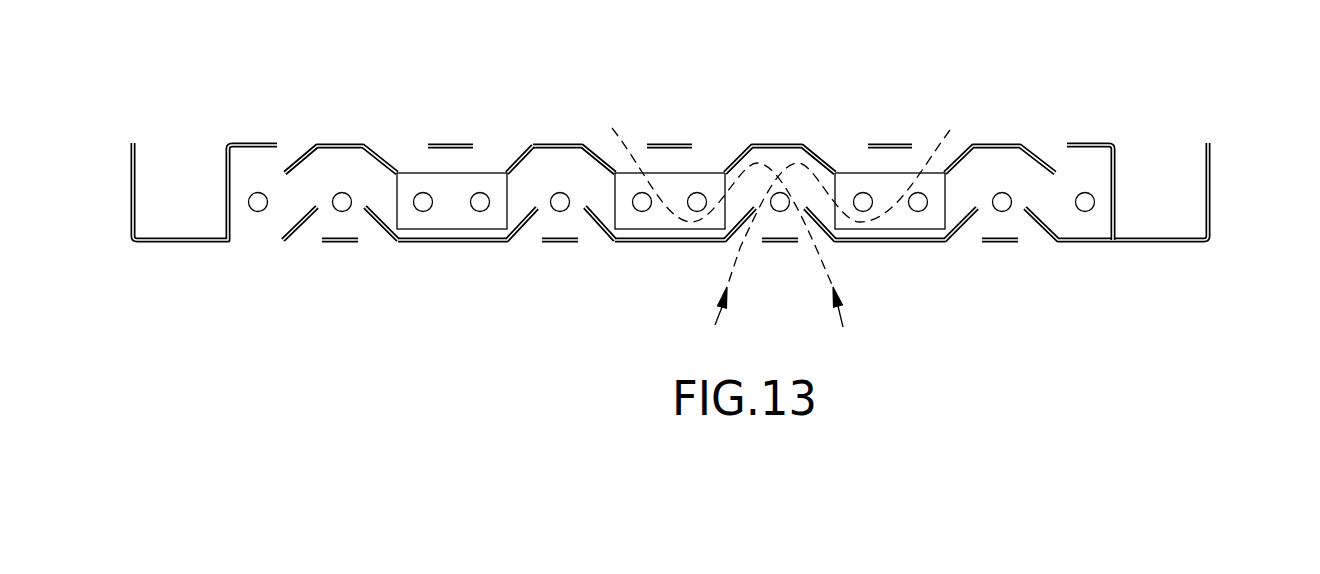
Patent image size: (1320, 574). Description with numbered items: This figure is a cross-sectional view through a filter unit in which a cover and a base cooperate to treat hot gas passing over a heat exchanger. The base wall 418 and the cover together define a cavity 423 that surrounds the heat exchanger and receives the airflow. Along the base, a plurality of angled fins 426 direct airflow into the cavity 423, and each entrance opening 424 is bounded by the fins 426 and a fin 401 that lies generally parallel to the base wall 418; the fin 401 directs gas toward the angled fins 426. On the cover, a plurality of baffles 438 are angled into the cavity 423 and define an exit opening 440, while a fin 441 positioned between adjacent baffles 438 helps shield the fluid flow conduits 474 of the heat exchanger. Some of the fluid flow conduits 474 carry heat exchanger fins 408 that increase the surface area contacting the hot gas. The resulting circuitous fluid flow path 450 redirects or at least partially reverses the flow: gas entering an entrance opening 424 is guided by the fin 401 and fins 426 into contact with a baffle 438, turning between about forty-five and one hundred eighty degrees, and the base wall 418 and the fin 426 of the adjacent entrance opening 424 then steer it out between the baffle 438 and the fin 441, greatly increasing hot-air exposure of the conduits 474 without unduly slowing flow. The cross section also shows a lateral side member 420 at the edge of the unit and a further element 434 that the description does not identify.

The base wall 418 is at (255, 241).
The fin 426 is at (387, 233).
The entrance opening 424 is at (587, 230).
The fluid flow conduit 474 is at (425, 196).
The baffle 438 is at (518, 157).
The cavity 423 is at (528, 182).
The heat exchanger fin 408 is at (685, 182).
The exit opening 440 is at (842, 163).
The fin 441 is at (887, 142).
The end bracket 434 is at (1080, 142).
The lateral side member 420 is at (1213, 182).
The fin 401 is at (1000, 242).
The fluid flow path 450 is at (840, 312).